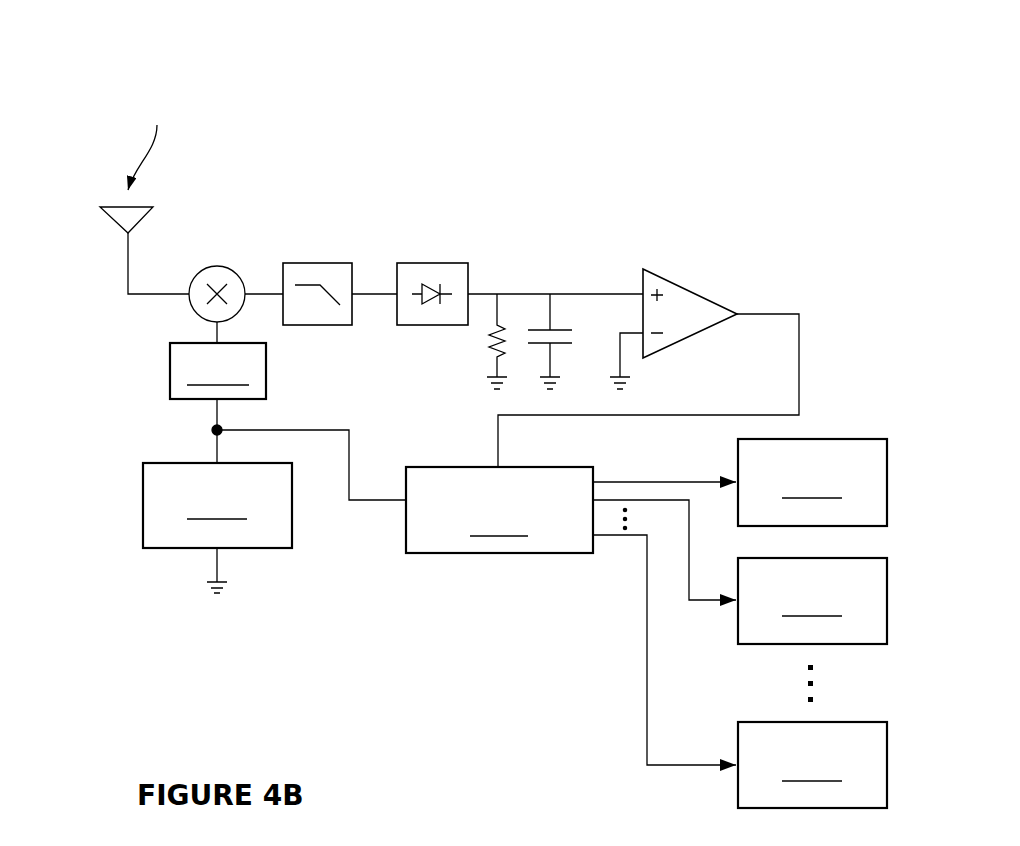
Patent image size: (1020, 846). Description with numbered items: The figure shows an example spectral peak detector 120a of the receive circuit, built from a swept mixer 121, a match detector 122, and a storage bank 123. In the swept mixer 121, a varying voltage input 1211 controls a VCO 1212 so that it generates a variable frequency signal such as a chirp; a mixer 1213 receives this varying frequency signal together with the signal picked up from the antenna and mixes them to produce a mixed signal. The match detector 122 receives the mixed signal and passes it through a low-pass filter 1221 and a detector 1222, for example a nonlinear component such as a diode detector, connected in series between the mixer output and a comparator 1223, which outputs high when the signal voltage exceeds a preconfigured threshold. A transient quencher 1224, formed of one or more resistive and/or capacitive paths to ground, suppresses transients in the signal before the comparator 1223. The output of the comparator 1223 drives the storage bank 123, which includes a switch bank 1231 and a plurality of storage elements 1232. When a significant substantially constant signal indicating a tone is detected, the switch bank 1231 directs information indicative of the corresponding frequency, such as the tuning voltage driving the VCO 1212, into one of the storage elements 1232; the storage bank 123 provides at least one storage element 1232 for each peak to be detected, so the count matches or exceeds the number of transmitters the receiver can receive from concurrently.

The wireless power receiver 120a is at (160, 45).
The swept mixer 121 is at (272, 600).
The varying voltage input 1211 is at (217, 505).
The VCO 1212 is at (218, 371).
The mixer 1213 is at (220, 248).
The match detector 122 is at (775, 163).
The low-pass filter 1221 is at (320, 252).
The detector 1222 is at (452, 250).
The comparator 1223 is at (707, 253).
The transient quencher 1224 is at (565, 252).
The storage bank 123 is at (485, 723).
The switch bank 1231 is at (499, 510).
The storage elements 1232 is at (812, 623).